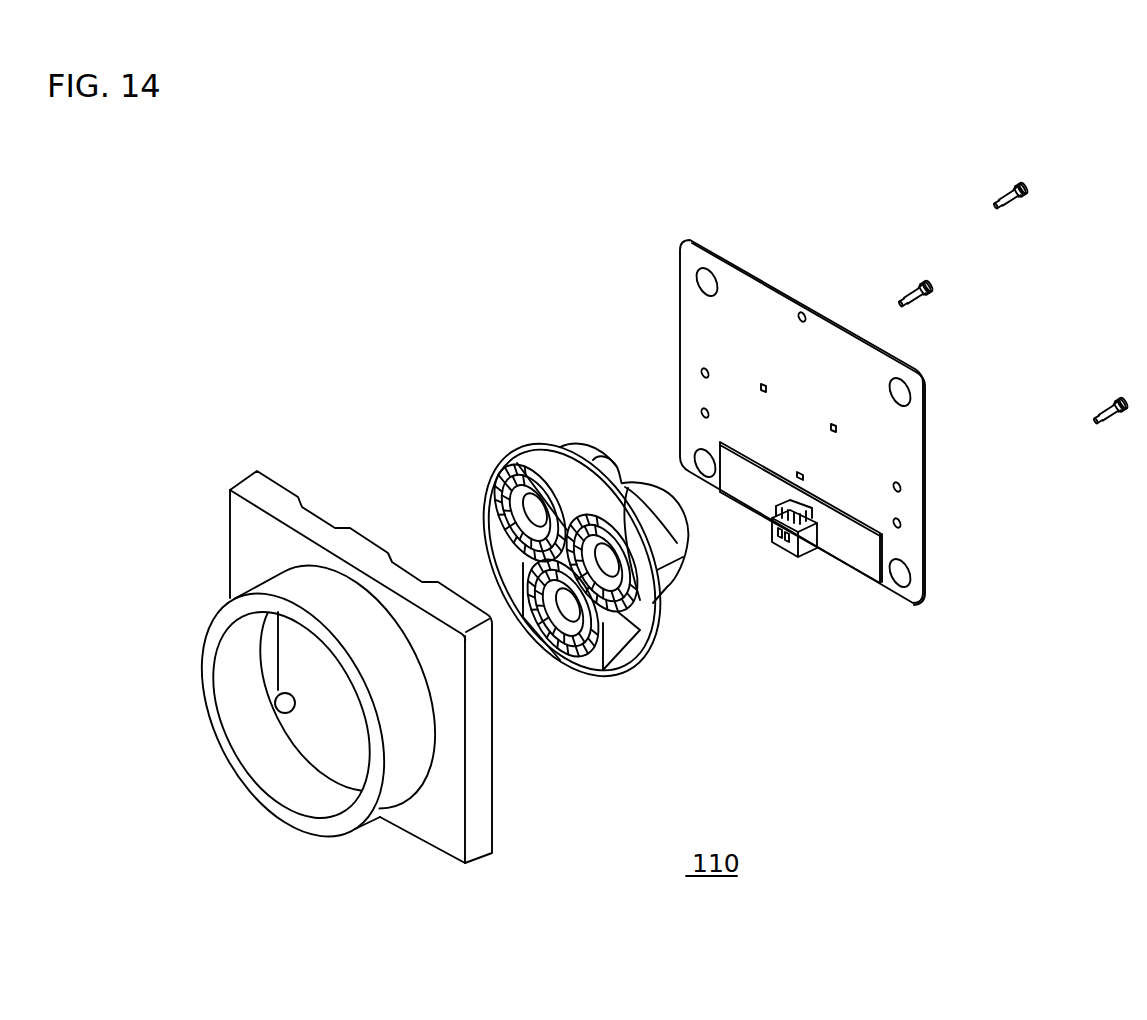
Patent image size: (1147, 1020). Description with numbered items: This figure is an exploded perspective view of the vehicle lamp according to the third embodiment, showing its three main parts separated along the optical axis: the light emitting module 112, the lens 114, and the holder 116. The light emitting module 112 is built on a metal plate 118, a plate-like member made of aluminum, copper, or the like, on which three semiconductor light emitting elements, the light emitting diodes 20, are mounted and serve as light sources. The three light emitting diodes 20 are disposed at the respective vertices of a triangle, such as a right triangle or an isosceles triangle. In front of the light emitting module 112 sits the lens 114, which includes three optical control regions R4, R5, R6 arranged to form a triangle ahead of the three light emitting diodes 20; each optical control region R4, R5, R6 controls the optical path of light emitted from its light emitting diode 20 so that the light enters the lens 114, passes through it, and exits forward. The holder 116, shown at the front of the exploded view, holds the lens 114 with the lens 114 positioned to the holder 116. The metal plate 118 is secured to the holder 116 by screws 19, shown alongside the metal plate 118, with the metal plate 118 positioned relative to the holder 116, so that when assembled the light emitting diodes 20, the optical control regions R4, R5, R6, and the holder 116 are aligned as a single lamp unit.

The light emitting module 112 is at (871, 402).
The lens 114 is at (568, 579).
The holder 116 is at (477, 810).
The metal plate 118 is at (943, 441).
The screw 19 is at (1005, 185).
The light emitting diode 20 is at (763, 384).
The optical control region R4 is at (620, 604).
The optical control region R5 is at (516, 526).
The optical control region R6 is at (553, 620).